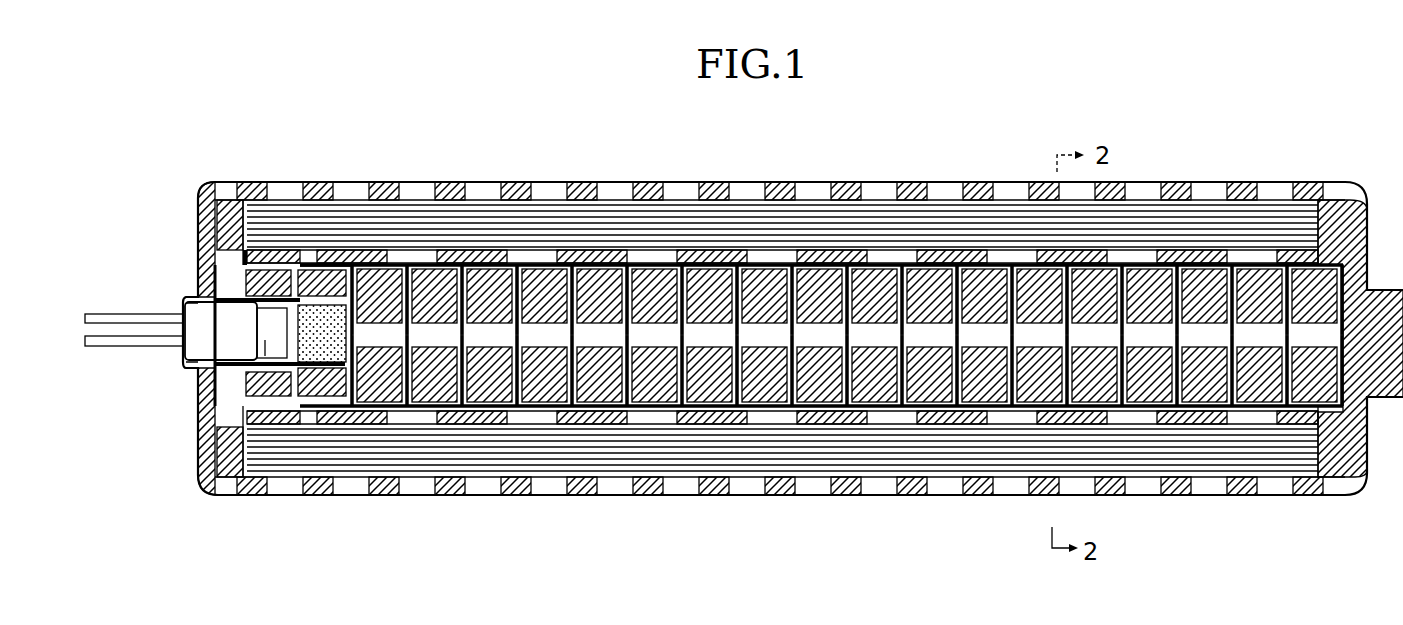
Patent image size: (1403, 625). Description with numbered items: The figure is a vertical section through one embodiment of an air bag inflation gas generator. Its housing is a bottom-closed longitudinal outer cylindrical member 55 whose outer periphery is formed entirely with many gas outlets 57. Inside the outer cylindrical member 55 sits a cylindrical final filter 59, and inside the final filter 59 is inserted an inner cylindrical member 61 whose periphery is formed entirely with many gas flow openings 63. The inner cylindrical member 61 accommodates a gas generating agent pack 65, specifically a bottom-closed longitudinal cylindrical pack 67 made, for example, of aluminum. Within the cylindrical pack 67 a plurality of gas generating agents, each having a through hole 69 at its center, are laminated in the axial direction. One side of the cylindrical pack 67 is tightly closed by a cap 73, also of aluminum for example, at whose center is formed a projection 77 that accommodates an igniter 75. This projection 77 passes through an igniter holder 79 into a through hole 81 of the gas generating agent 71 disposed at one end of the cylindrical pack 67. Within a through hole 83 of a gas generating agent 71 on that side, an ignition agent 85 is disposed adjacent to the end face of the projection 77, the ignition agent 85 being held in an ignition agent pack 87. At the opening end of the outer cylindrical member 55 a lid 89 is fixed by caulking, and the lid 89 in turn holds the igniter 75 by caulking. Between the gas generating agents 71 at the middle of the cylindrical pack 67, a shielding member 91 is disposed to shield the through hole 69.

The outer cylindrical member 55 is at (448, 186).
The gas outlets 57 is at (808, 188).
The final filter 59 is at (605, 210).
The inner cylindrical member 61 is at (305, 252).
The gas flow openings 63 is at (1027, 255).
The gas generating agent pack 65 is at (893, 417).
The cylindrical pack 67 is at (821, 402).
The through hole 69 is at (492, 345).
The gas generating agent 71 is at (540, 382).
The cap 73 is at (197, 380).
The igniter 75 is at (216, 488).
The projection 77 is at (280, 398).
The igniter holder 79 is at (200, 287).
The through hole 81 is at (318, 364).
The through hole 83 is at (365, 392).
The ignition agent 85 is at (340, 398).
The ignition agent pack 87 is at (333, 268).
The lid 89 is at (202, 235).
The shielding member 91 is at (782, 338).